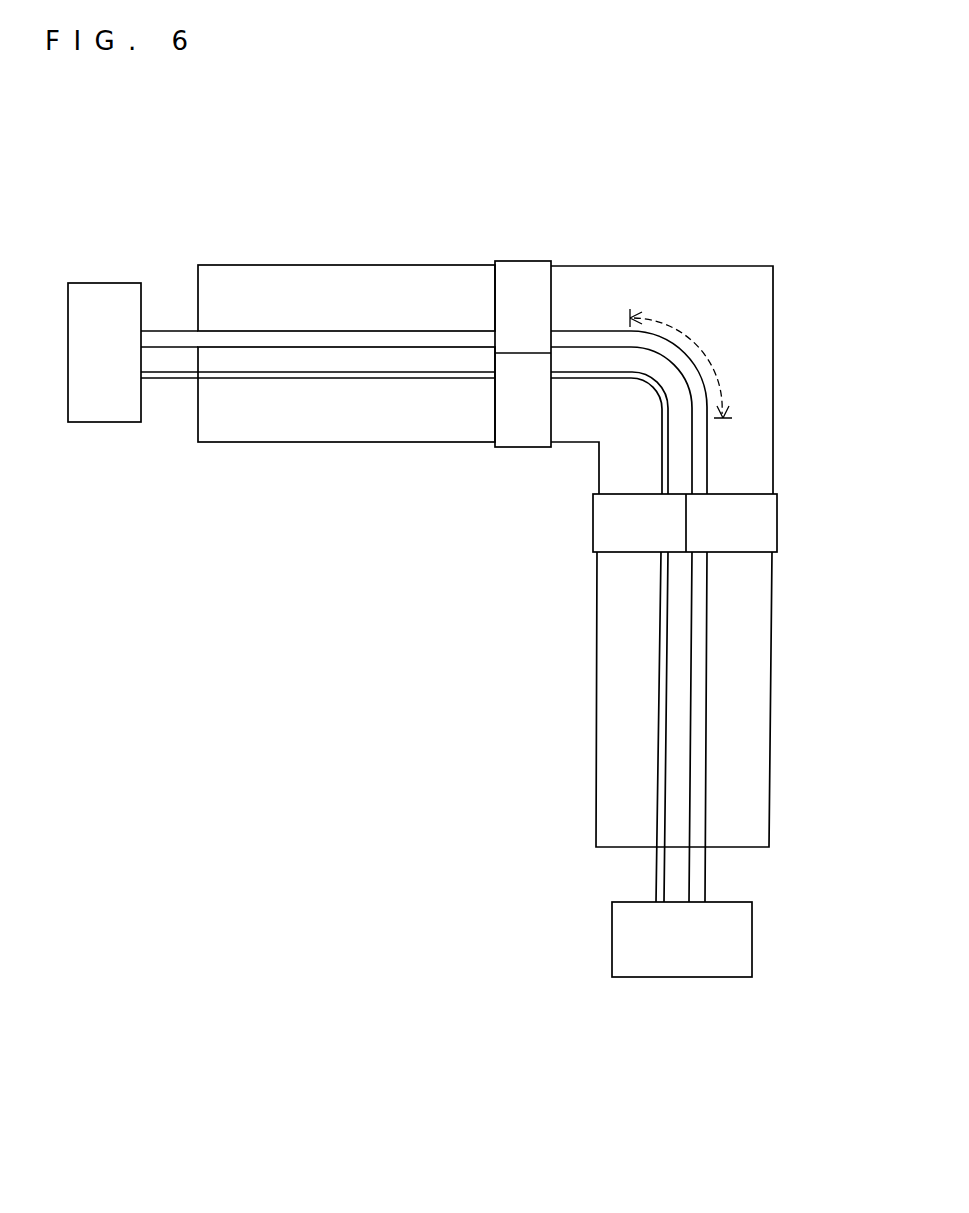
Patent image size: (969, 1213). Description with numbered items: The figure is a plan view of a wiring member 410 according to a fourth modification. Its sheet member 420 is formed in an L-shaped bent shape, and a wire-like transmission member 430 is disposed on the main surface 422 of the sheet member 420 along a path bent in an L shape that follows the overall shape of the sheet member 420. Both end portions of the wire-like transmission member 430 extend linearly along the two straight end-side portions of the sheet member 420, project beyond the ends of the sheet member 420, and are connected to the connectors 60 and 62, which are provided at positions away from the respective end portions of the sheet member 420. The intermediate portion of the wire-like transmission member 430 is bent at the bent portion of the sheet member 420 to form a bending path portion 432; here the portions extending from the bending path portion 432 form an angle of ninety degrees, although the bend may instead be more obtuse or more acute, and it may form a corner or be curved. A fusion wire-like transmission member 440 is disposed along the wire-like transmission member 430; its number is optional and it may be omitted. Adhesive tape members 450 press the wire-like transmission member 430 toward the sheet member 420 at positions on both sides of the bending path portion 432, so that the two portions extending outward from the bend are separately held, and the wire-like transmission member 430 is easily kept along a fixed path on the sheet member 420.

The connector 60 is at (107, 281).
The connector 62 is at (682, 978).
The wiring member 410 is at (399, 231).
The sheet member 420 is at (593, 264).
The main surface 422 is at (664, 285).
The wire-like transmission member 430 is at (318, 329).
The bending path portion 432 is at (705, 355).
The fusion wire-like transmission member 440 is at (318, 381).
The adhesive tape member 450 is at (523, 278).